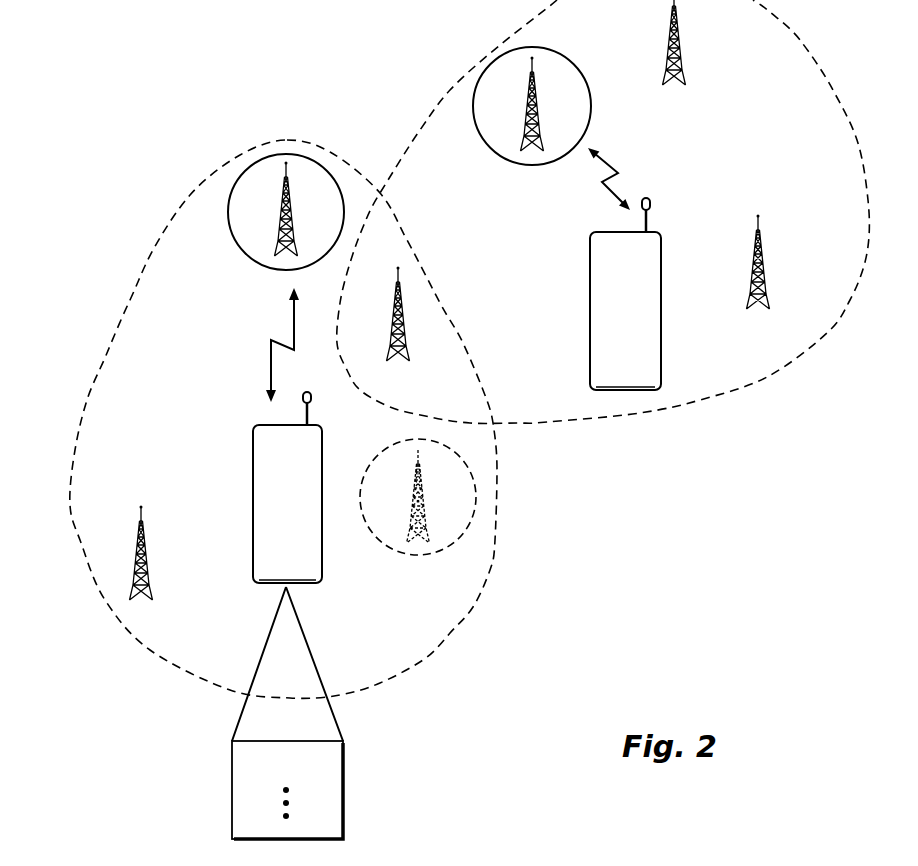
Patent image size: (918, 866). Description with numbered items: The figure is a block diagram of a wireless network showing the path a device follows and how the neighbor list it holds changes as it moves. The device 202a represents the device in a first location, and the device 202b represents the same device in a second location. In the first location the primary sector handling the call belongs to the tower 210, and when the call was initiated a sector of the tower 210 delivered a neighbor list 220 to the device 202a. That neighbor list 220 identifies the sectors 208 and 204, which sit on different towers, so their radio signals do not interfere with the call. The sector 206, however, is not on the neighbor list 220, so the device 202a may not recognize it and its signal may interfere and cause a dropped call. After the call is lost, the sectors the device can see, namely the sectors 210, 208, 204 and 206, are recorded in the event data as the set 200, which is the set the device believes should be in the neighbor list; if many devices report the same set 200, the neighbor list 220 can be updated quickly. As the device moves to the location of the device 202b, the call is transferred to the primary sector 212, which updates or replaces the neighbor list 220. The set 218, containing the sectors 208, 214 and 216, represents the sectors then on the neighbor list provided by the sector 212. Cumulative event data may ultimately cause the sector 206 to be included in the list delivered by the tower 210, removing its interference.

The set 200 is at (472, 612).
The device 202a is at (253, 477).
The device 202b is at (590, 292).
The sector 204 is at (152, 571).
The sector 206 is at (390, 545).
The sector 208 is at (408, 358).
The tower 210 is at (237, 243).
The primary sector 212 is at (593, 104).
The sector 214 is at (688, 80).
The sector 216 is at (770, 306).
The set 218 is at (638, 415).
The neighbor list 220 is at (343, 790).